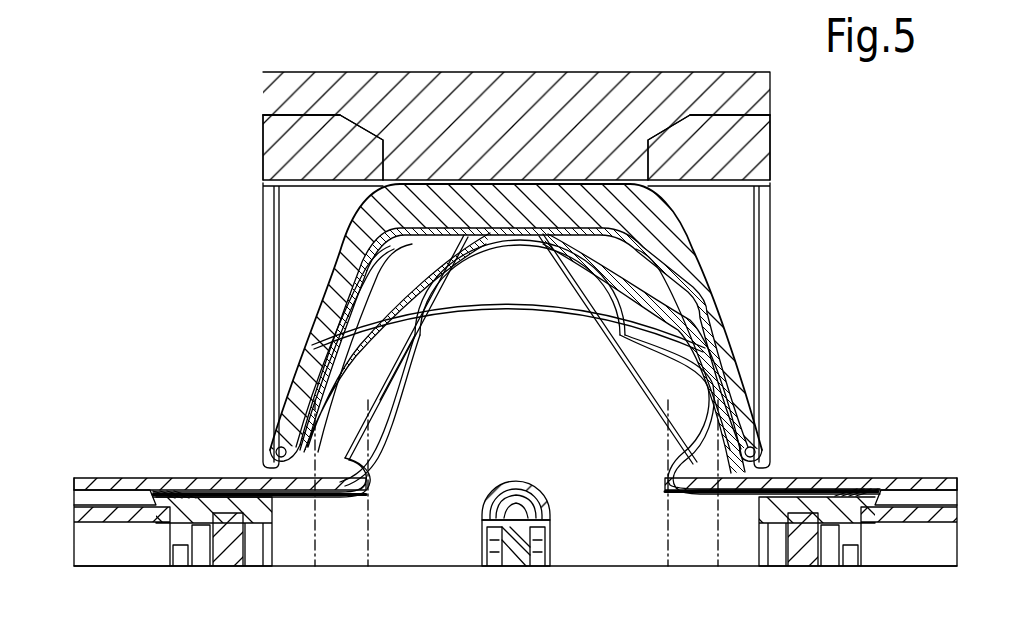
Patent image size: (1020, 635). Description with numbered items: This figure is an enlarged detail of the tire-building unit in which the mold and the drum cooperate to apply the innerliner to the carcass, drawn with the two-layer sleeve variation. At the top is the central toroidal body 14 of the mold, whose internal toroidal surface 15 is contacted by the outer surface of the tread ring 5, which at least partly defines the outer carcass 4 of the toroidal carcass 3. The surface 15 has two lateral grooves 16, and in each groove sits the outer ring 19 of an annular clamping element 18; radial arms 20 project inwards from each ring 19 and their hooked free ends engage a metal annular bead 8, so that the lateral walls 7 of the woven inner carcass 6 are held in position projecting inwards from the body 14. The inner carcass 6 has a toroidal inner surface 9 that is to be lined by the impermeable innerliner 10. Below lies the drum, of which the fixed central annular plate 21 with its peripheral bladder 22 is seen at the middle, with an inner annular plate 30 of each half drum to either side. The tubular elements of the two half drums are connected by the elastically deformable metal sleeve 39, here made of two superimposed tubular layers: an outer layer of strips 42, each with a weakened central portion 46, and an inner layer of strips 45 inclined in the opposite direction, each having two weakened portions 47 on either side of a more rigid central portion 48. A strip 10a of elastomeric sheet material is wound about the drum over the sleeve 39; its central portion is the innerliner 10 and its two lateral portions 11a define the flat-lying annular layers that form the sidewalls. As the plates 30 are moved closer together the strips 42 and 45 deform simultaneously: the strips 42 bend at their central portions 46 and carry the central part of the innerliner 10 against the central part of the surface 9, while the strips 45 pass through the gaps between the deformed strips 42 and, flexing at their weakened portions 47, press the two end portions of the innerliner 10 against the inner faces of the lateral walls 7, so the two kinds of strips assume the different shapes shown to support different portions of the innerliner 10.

The toroidal carcass 3 is at (447, 170).
The outer carcass 4 is at (492, 190).
The tread ring 5 is at (545, 205).
The inner carcass 6 is at (322, 296).
The lateral wall 7 is at (312, 336).
The metal annular bead 8 is at (270, 449).
The toroidal inner surface 9 is at (612, 244).
The innerliner 10 is at (405, 289).
The strip of elastomeric sheet material 10a is at (770, 480).
The lateral portion 11a is at (946, 478).
The central toroidal body 14 is at (592, 117).
The toroidal surface 15 is at (612, 192).
The lateral groove 16 is at (297, 122).
The annular clamping element 18 is at (259, 162).
The outer ring 19 is at (336, 135).
The radial arm 20 is at (271, 234).
The fixed central annular plate 21 is at (548, 545).
The peripheral bladder 22 is at (546, 499).
The inner annular plate 30 is at (238, 548).
The elastically deformable tubular sleeve 39 is at (352, 510).
The strip 42 is at (370, 418).
The strip 45 is at (373, 475).
The weakened central portion 46 is at (541, 252).
The weakened portion 47 is at (330, 382).
The more rigid central portion 48 is at (487, 306).